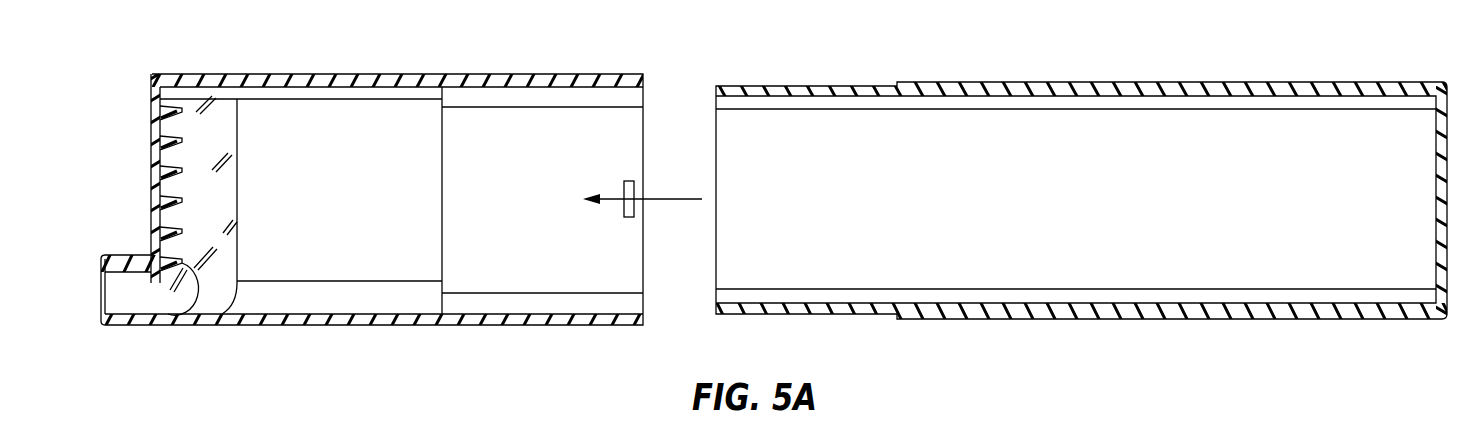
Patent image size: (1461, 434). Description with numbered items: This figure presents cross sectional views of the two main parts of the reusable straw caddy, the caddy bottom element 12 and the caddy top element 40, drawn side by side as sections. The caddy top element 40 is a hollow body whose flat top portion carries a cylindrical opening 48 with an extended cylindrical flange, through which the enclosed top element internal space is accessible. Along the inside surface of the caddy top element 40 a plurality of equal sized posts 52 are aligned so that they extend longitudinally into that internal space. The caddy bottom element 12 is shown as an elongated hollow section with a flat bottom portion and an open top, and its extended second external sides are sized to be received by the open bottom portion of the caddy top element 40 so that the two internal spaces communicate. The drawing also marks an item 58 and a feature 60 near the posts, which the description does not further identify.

The caddy bottom element 12 is at (1158, 75).
The caddy top element 40 is at (343, 60).
The cylindrical opening 48 is at (127, 300).
The equal sized posts 52 is at (182, 167).
The insert 58 is at (637, 192).
The serrated insert body 60 is at (165, 213).